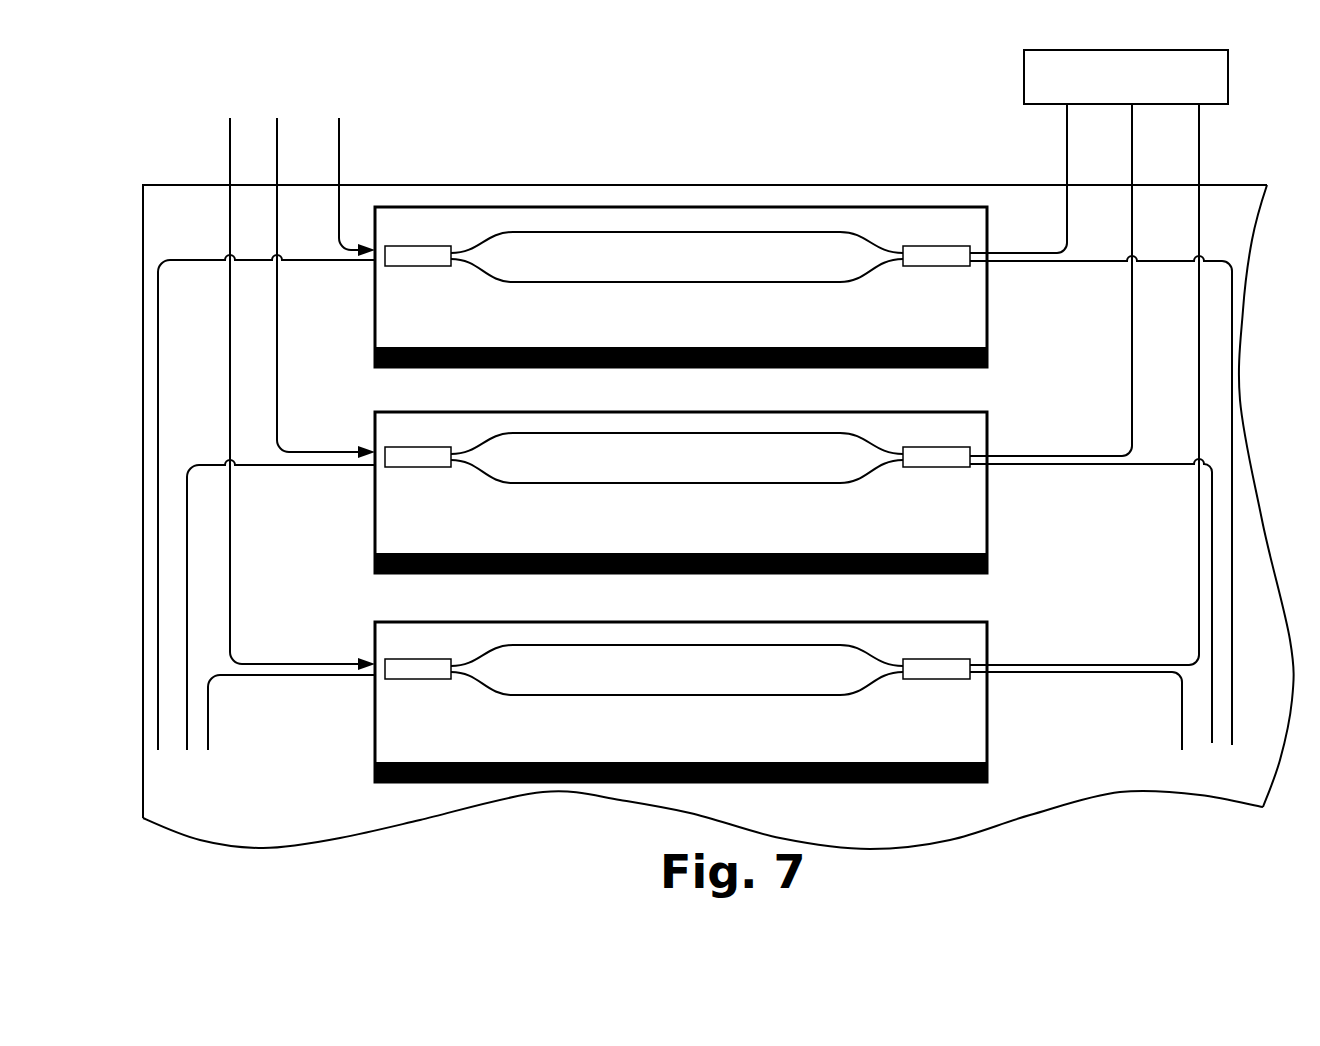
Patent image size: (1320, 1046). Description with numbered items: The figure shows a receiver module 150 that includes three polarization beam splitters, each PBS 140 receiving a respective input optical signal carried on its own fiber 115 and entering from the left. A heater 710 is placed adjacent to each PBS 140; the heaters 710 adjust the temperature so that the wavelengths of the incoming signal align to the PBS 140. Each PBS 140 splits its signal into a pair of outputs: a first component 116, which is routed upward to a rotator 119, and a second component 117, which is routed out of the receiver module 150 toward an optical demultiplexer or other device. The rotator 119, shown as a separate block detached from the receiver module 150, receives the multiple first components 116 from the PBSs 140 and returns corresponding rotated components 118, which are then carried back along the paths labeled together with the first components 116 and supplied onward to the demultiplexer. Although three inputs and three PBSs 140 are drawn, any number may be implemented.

The input optical fiber 115 is at (339, 130).
The first component 116 is at (628, 235).
The second component 117 is at (718, 283).
The rotated component 118 is at (350, 262).
The rotator 119 is at (1024, 78).
The PBS 140 is at (518, 207).
The receiver module 150 is at (1240, 158).
The heater 710 is at (660, 367).